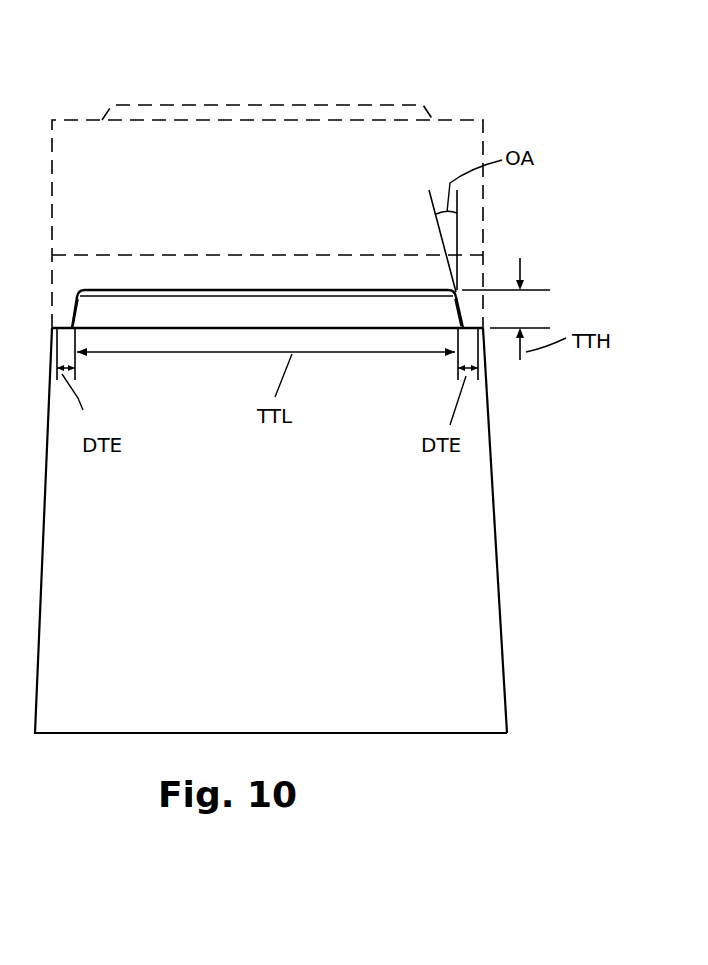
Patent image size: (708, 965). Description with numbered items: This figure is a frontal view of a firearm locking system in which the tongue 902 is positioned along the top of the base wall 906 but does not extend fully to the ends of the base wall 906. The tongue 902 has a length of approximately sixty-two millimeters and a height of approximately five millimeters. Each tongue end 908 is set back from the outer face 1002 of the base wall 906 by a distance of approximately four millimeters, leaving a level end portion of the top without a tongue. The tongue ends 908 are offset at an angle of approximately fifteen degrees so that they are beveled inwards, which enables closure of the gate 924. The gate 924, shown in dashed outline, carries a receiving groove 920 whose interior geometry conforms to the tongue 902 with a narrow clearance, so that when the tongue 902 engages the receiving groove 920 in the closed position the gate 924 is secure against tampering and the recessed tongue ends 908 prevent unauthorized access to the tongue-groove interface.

The tongue 902 is at (266, 282).
The base wall 906 is at (284, 572).
The tongue ends 908 is at (452, 306).
The receiving groove 920 is at (77, 290).
The gate 924 is at (82, 118).
The outer face of the base wall 1002 is at (492, 422).